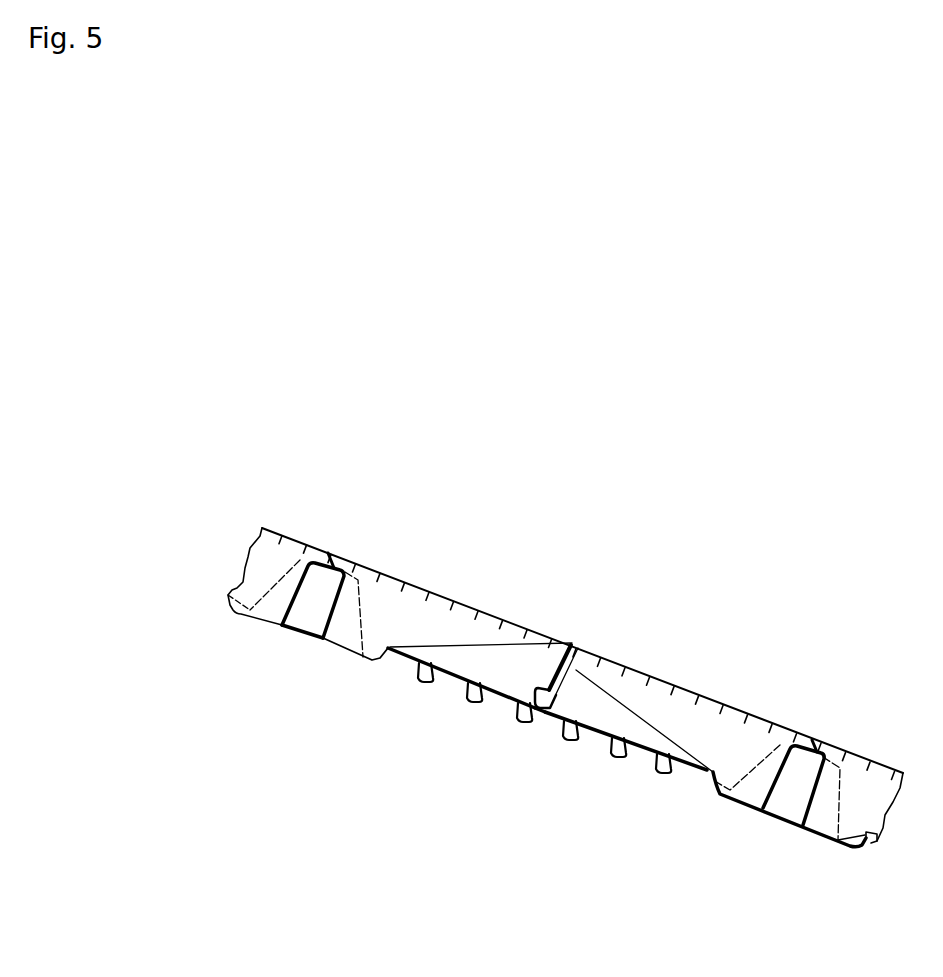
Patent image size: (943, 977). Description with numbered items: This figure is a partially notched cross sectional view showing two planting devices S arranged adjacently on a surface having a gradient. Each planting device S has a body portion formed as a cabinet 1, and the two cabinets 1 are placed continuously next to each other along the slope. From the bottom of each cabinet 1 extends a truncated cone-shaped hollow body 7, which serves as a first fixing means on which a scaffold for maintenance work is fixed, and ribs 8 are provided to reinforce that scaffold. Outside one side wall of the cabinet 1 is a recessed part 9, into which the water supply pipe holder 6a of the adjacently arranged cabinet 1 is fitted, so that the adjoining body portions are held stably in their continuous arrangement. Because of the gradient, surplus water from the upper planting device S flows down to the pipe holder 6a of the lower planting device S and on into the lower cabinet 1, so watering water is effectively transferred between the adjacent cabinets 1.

The cabinet 1 is at (403, 665).
The water supply pipe holder 6a is at (543, 712).
The truncated cone-shaped hollow body 7 is at (312, 627).
The rib 8 is at (827, 822).
The recessed part 9 is at (533, 717).
The planting device S is at (374, 519).